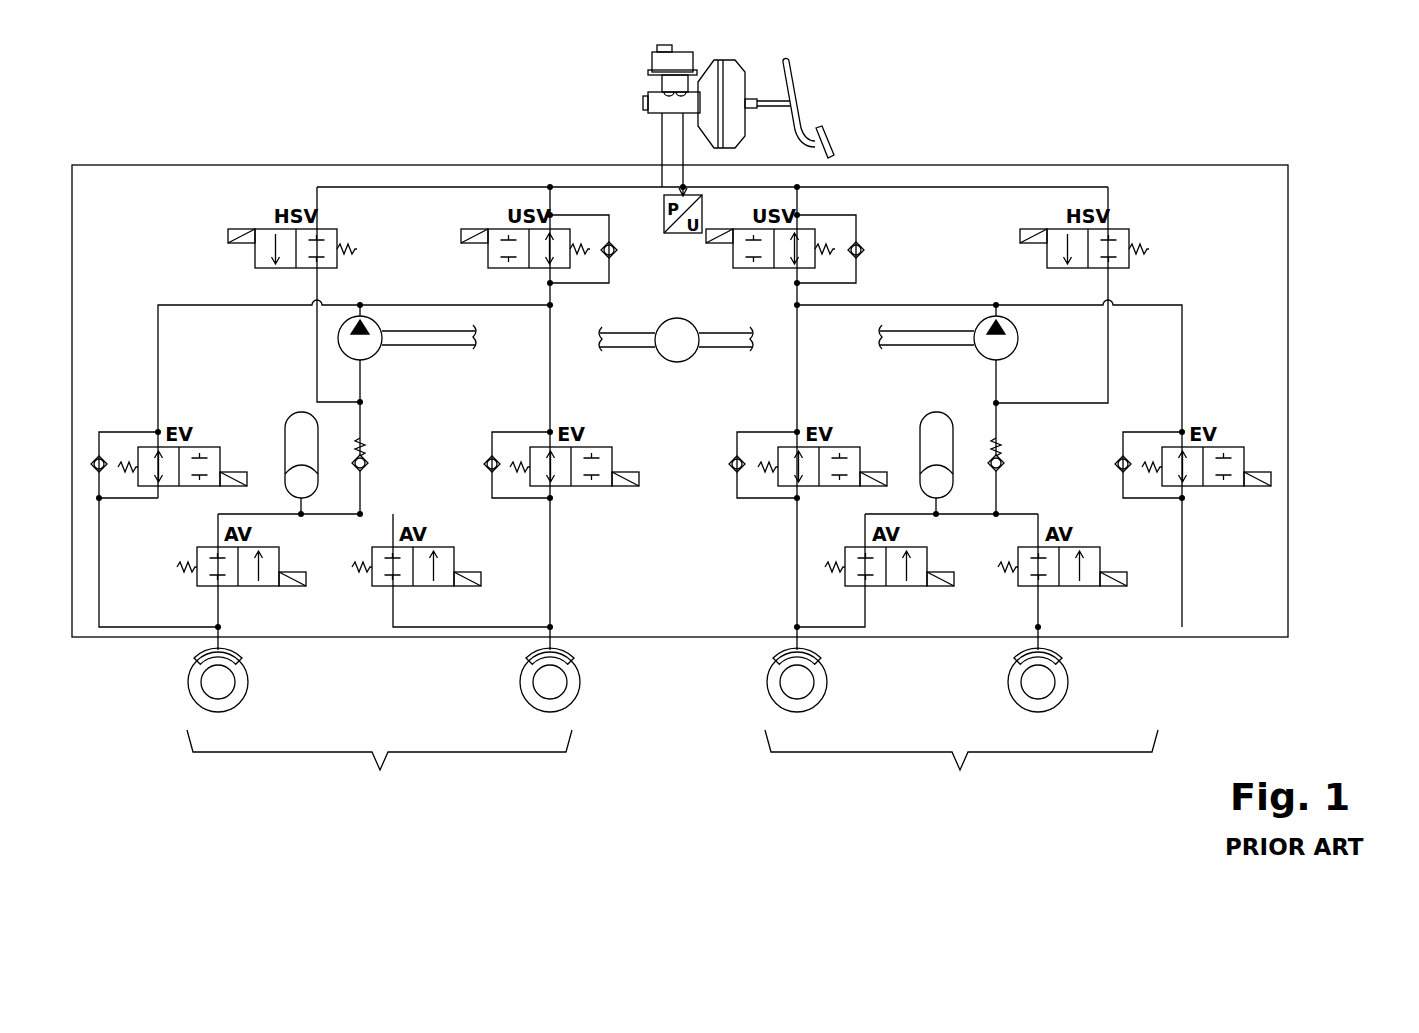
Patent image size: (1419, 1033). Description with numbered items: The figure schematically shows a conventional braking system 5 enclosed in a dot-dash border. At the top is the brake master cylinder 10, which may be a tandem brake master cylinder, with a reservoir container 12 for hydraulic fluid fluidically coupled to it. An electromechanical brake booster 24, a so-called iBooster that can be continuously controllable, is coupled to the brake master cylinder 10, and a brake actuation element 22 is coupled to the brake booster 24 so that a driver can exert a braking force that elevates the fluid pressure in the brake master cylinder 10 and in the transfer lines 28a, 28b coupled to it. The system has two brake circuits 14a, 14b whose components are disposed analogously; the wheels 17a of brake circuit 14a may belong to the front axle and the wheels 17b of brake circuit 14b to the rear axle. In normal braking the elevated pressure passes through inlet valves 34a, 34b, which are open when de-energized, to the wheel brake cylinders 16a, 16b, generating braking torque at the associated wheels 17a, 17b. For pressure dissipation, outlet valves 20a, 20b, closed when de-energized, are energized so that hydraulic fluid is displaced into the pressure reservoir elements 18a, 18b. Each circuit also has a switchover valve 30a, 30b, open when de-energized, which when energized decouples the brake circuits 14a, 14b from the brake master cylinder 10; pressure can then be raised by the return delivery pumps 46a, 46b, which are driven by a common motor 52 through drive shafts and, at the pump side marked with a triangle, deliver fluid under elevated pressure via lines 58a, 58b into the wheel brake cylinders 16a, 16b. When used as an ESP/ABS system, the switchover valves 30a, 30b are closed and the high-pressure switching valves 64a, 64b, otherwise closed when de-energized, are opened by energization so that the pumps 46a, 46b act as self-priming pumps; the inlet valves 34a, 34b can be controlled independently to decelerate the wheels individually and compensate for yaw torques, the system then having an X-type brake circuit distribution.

The braking system 5 is at (1181, 165).
The brake master cylinder 10 is at (648, 104).
The reservoir container 12 is at (658, 66).
The brake circuit 14a is at (961, 769).
The brake circuit 14b is at (379, 769).
The wheel brake cylinder 16a is at (819, 660).
The wheel brake cylinder 16b is at (240, 660).
The wheel 17a is at (813, 700).
The wheel 17b is at (234, 700).
The pressure reservoir element 18a is at (922, 430).
The pressure reservoir element 18b is at (287, 430).
The outlet valve 20a is at (890, 588).
The outlet valve 20b is at (243, 588).
The brake actuation element 22 is at (800, 128).
The electromechanical brake booster 24 is at (727, 62).
The transfer line 28a is at (972, 187).
The transfer line 28b is at (582, 187).
The switchover valve 30a is at (733, 258).
The switchover valve 30b is at (488, 258).
The inlet valve 34a is at (825, 487).
The inlet valve 34b is at (187, 487).
The pump 46a is at (977, 356).
The pump 46b is at (378, 356).
The motor 52 is at (677, 362).
The line 58a is at (1181, 305).
The line 58b is at (167, 305).
The high-pressure switching valve 64a is at (1047, 258).
The high-pressure switching valve 64b is at (255, 258).